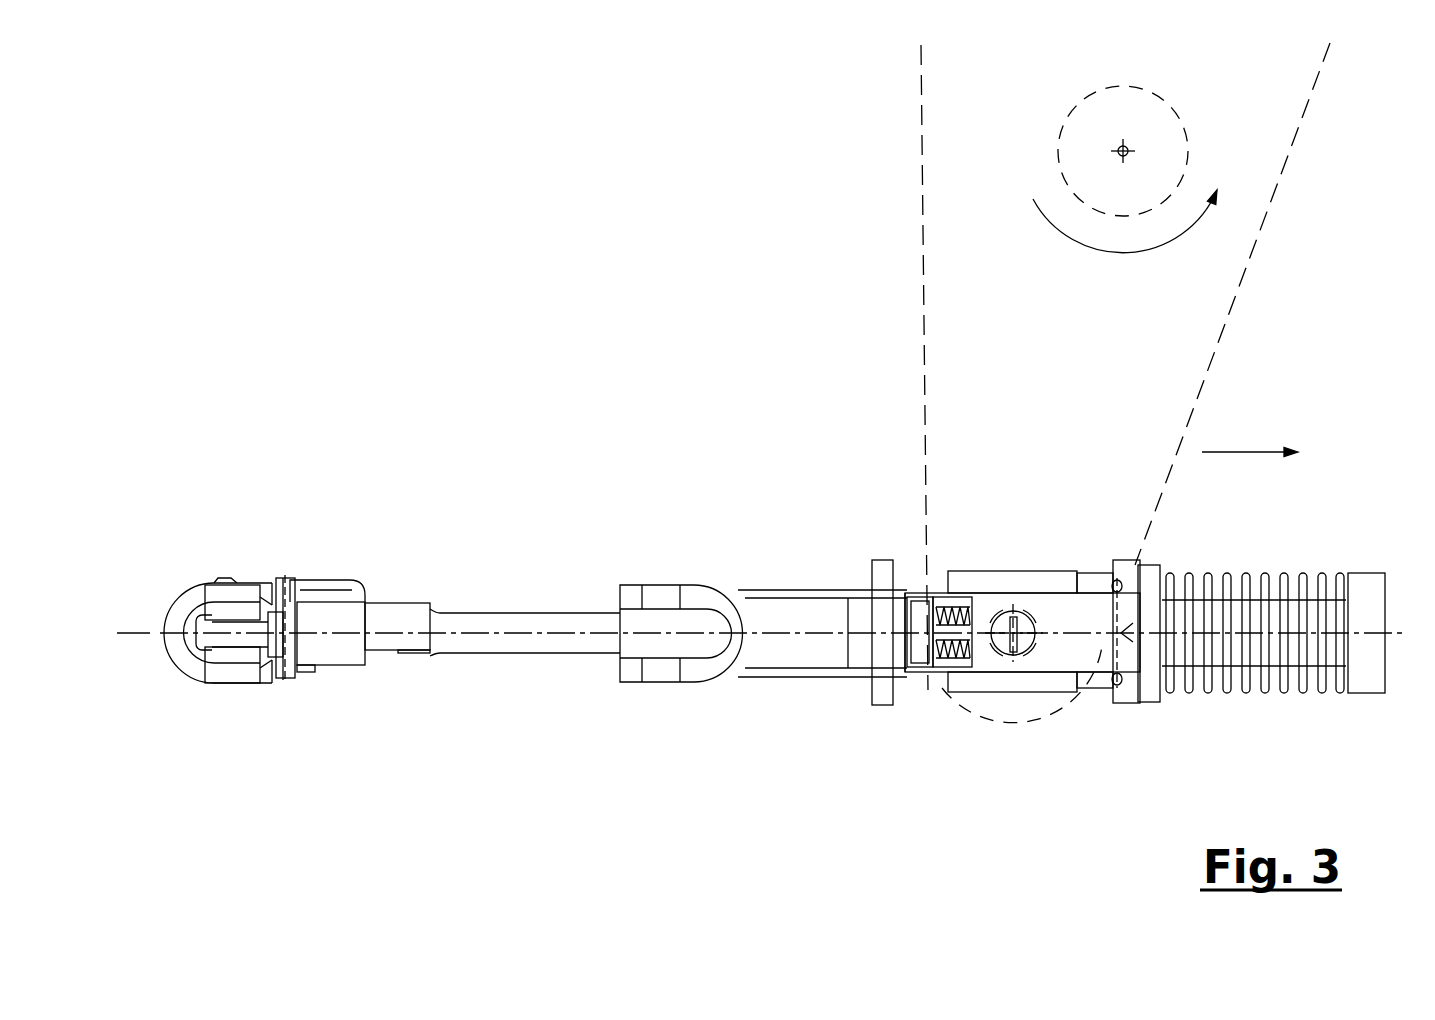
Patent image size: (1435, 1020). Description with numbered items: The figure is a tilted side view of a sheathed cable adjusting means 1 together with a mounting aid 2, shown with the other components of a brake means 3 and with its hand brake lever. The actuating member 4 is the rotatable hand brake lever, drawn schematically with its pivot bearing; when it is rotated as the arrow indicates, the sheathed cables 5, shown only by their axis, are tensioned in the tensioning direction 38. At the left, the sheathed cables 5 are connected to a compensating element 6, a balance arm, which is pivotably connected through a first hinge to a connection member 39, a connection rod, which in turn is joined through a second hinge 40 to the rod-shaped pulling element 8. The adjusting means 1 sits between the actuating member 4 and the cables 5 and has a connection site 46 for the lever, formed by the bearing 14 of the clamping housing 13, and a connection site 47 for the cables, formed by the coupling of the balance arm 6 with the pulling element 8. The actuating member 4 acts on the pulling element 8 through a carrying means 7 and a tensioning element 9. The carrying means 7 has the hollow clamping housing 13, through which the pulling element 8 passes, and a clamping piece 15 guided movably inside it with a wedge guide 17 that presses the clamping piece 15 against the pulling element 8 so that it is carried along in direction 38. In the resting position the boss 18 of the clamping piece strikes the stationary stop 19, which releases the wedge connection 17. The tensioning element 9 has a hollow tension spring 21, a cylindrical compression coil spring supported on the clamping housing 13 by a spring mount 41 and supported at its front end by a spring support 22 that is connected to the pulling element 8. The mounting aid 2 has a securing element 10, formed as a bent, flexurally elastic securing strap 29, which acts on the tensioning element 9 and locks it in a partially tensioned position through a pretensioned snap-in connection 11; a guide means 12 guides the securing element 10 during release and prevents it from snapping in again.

The sheathed cable adjusting means 1 is at (828, 578).
The mounting aid 2 is at (1297, 596).
The brake means 3 is at (429, 475).
The actuating member 4 is at (963, 180).
The sheathed cable 5 is at (133, 640).
The compensating element 6 is at (315, 643).
The carrying means 7 is at (926, 703).
The pulling element 8 is at (805, 643).
The tensioning element 9 is at (1255, 640).
The securing element 10 is at (1038, 640).
The snap-in connection 11 is at (1363, 613).
The guide means 12 is at (1294, 651).
The clamping housing 13 is at (1012, 577).
The bearing 14 is at (1000, 657).
The clamping piece 15 is at (1083, 579).
The wedge guide 17 is at (1114, 580).
The boss 18 is at (918, 613).
The stop 19 is at (883, 560).
The tension spring 21 is at (1197, 578).
The spring support 22 is at (1390, 658).
The securing strap 29 is at (1038, 640).
The tensioning direction 38 is at (1247, 452).
The connection member 39 is at (522, 638).
The second hinge 40 is at (655, 667).
The spring mount 41 is at (1152, 690).
The connection site 46 is at (1022, 694).
The connection site 47 is at (223, 552).